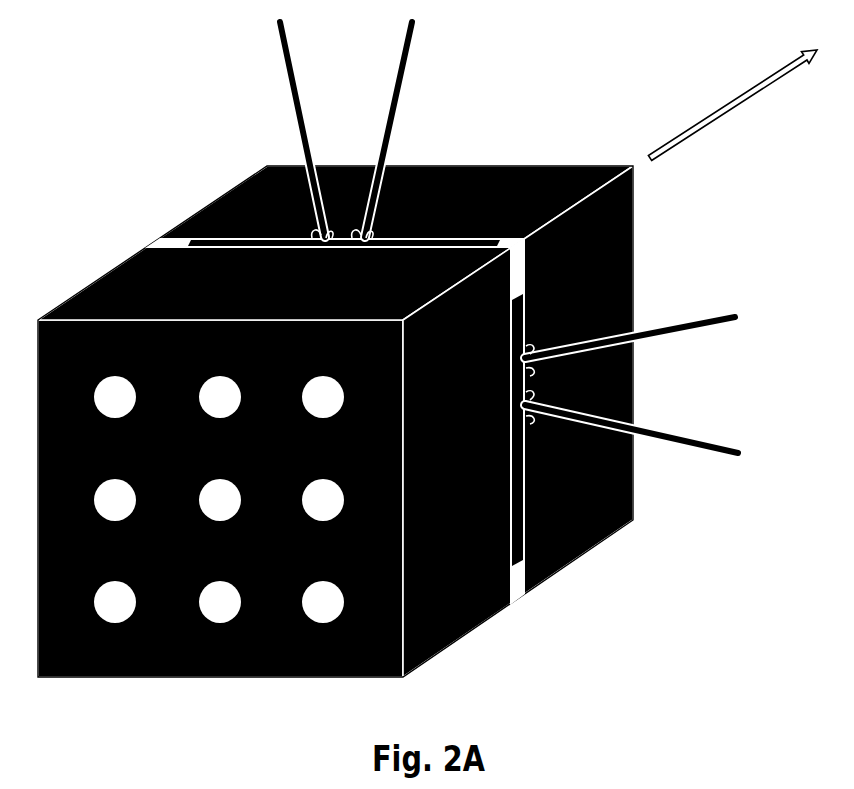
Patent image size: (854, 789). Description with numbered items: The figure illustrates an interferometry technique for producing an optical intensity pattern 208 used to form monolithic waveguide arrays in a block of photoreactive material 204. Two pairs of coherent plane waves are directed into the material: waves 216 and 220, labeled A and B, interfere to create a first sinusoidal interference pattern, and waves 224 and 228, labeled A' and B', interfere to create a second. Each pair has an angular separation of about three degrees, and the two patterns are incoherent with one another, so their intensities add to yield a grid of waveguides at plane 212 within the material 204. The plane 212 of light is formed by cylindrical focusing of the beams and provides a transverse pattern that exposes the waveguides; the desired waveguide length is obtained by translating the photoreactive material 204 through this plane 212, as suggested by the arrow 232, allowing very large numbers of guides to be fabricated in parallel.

The photoreactive material 204 is at (493, 165).
The optical intensity pattern 208 is at (122, 668).
The plane 212 is at (157, 243).
The wave A 216 is at (295, 68).
The wave B 220 is at (388, 153).
The wave A' 224 is at (666, 336).
The wave B' 228 is at (714, 441).
The direction arrow 232 is at (778, 68).